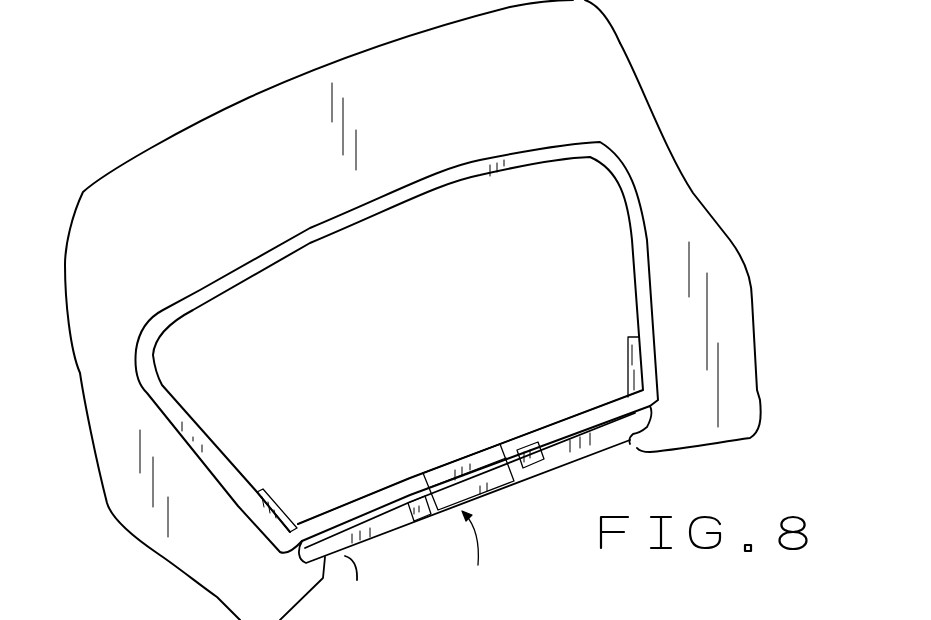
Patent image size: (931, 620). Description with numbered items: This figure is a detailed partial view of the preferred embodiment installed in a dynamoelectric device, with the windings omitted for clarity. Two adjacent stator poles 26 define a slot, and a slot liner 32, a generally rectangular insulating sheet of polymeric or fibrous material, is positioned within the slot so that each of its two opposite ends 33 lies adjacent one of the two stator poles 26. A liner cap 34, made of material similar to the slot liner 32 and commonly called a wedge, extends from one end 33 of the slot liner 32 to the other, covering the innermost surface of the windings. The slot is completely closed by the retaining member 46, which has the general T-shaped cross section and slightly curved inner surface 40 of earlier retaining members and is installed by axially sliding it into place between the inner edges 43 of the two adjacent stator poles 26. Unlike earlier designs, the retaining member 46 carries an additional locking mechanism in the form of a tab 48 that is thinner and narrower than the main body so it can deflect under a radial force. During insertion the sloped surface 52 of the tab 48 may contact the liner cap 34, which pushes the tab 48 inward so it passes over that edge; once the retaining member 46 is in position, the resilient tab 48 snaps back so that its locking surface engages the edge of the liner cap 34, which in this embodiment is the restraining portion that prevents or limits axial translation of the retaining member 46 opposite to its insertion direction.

The stator pole 26 is at (723, 331).
The slot liner 32 is at (563, 150).
The end of slot liner 33 is at (650, 368).
The liner cap 34 is at (595, 413).
The inner surface 40 is at (383, 547).
The inner edge 43 is at (348, 562).
The retaining member 46 is at (567, 450).
The tab 48 is at (474, 550).
The sloped surface 52 is at (498, 458).